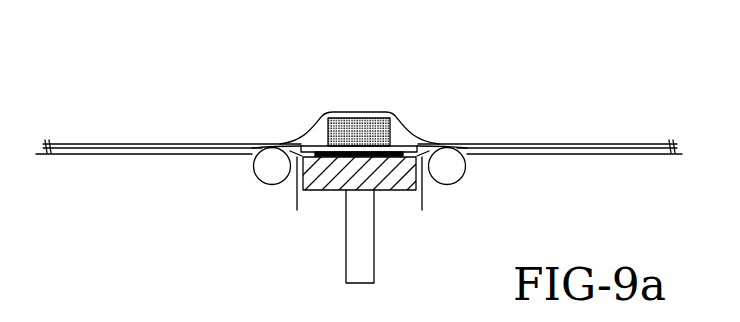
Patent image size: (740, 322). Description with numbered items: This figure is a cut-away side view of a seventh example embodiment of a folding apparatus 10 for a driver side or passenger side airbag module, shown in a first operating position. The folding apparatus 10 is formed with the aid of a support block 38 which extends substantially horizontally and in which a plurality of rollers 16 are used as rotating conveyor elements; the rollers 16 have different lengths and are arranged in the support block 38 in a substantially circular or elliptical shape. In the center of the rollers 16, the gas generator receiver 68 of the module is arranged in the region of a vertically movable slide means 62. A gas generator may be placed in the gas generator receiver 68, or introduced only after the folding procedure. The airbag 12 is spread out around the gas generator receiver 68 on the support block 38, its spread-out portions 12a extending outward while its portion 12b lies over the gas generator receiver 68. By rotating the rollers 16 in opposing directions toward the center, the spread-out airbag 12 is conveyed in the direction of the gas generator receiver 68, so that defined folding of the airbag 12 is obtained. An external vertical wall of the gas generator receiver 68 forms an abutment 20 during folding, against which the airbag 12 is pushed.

The folding apparatus 10 is at (359, 154).
The airbag 12 is at (595, 143).
The sheet edge portion 12a is at (263, 144).
The sheet cover portion 12b is at (313, 130).
The rollers 16 is at (262, 182).
The abutment 20 is at (396, 117).
The support block 38 is at (138, 155).
The slide means 62 is at (375, 228).
The gas generator receiver 68 is at (365, 128).